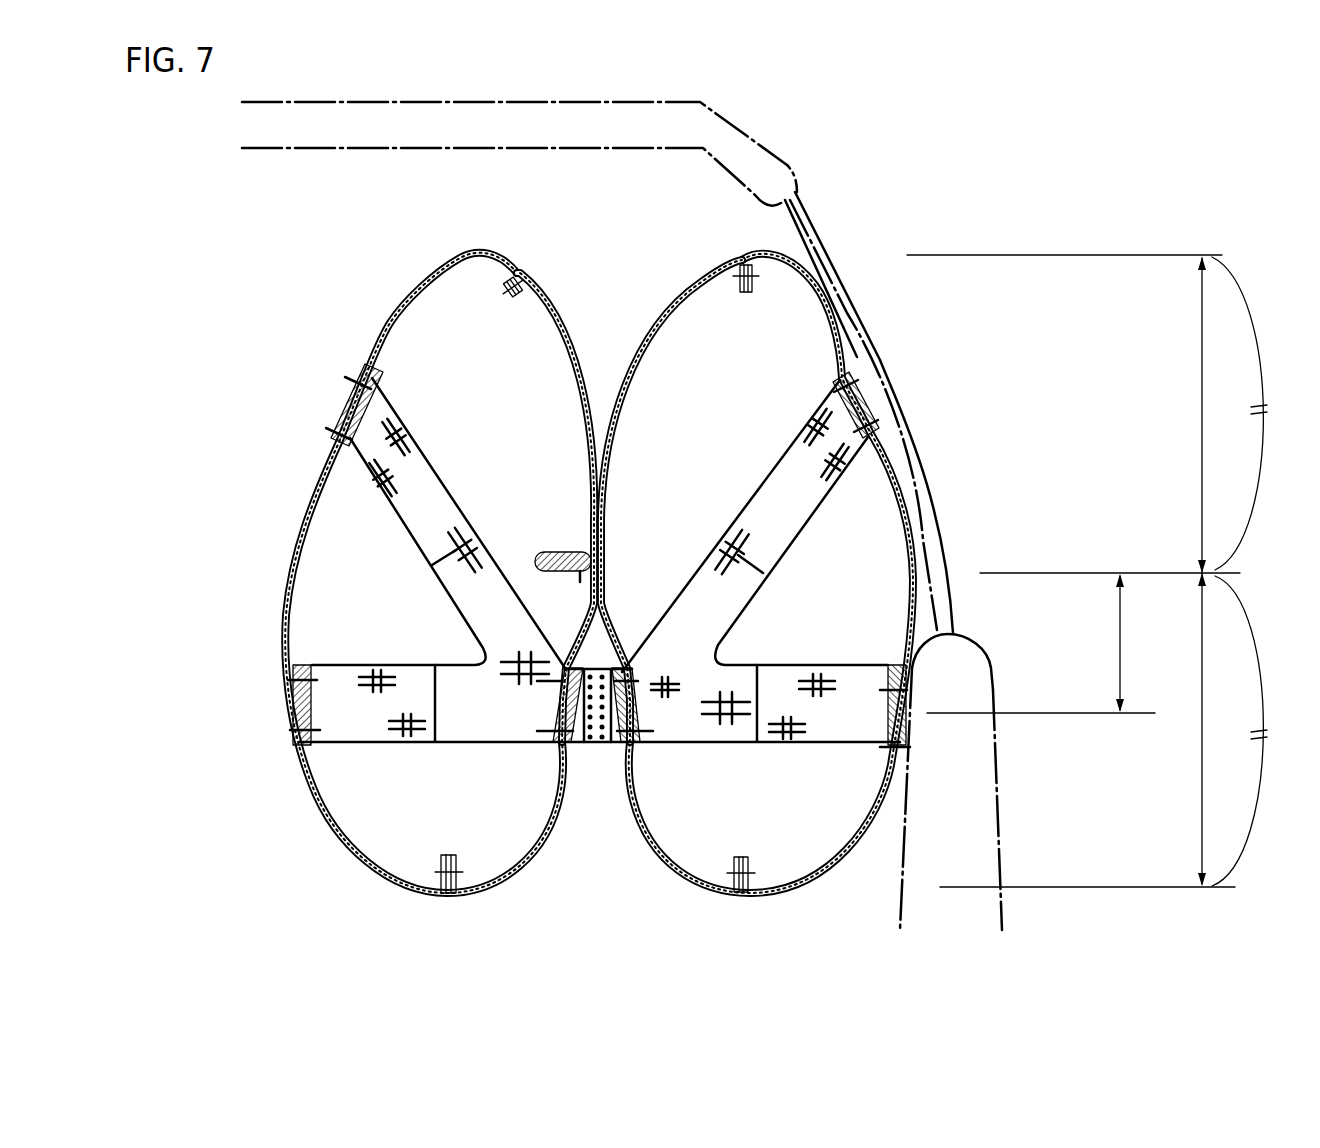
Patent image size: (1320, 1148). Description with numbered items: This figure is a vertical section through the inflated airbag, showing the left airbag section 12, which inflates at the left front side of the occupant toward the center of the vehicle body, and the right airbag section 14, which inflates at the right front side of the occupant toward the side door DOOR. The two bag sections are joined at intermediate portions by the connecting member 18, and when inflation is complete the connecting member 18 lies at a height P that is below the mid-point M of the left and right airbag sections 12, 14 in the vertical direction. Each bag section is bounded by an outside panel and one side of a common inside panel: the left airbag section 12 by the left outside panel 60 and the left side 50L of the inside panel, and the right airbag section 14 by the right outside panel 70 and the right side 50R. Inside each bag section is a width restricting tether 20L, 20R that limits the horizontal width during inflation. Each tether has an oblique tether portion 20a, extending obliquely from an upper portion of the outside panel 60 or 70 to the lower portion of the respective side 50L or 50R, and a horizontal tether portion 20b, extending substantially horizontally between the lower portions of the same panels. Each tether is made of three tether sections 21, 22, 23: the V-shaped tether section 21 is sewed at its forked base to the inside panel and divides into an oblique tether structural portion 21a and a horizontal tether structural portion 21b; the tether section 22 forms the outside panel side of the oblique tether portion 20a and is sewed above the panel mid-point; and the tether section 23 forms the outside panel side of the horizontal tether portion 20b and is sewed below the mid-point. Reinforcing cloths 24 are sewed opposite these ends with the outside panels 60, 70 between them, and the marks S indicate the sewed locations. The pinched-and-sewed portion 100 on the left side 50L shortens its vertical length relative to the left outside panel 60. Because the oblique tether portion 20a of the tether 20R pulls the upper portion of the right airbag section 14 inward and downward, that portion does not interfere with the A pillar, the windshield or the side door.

The left airbag section 12 is at (566, 574).
The right airbag section 14 is at (777, 234).
The connecting member 18 is at (593, 757).
The width restricting tether 20L is at (407, 573).
The width restricting tether 20R is at (757, 594).
The oblique tether portion 20a is at (448, 462).
The horizontal tether portion 20b is at (408, 757).
The tether section 21 is at (600, 588).
The oblique tether structural portion 21a is at (451, 592).
The horizontal tether structural portion 21b is at (453, 732).
The tether section 22 is at (397, 512).
The tether section 23 is at (347, 673).
The reinforcing cloth 24 is at (347, 402).
The left side of inside panel 50L is at (577, 388).
The right side of inside panel 50R is at (658, 315).
The left outside panel 60 is at (298, 495).
The right outside panel 70 is at (833, 863).
The pinched-and-sewed portion 100 is at (547, 556).
The sewn seam S is at (506, 283).
The mid-point M is at (1218, 573).
The height P is at (1051, 654).
The door DOOR is at (1008, 786).